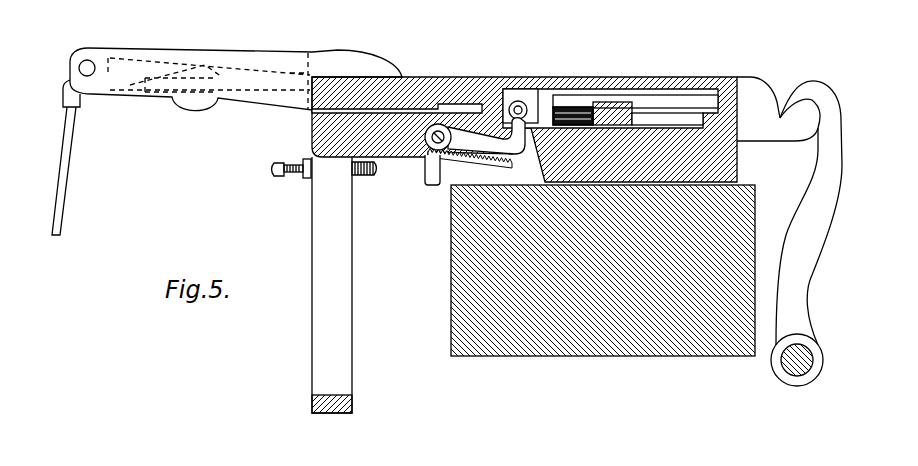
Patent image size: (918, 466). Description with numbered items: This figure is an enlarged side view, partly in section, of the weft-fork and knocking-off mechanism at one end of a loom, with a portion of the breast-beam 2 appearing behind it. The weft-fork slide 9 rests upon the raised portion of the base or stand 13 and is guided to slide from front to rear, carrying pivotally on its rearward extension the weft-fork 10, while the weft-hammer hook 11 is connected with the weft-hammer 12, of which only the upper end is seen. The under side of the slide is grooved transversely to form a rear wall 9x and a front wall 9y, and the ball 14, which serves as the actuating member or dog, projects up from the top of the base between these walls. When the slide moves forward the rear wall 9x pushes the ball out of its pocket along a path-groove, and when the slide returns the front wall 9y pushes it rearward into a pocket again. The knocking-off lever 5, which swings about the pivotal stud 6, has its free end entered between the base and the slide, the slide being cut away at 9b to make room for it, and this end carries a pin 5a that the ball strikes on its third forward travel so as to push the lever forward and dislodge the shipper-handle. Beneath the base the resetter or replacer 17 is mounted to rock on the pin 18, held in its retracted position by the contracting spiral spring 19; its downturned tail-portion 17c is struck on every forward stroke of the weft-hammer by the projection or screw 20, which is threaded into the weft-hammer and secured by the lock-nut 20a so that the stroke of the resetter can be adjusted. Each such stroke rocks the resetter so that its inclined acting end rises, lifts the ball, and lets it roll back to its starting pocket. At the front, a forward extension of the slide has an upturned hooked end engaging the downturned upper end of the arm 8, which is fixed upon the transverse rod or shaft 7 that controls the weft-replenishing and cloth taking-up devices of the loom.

The breast-beam 2 is at (460, 273).
The knocking-off lever 5 is at (613, 106).
The pin or projection 5a is at (577, 112).
The pivotal stud 6 is at (693, 120).
The rod or shaft 7 is at (790, 370).
The arm 8 is at (802, 211).
The weft-fork slide 9 is at (660, 77).
The cut-away portion of weft-fork slide 9b is at (680, 100).
The rear transverse wall 9x is at (518, 100).
The front transverse wall 9y is at (533, 91).
The weft-fork 10 is at (72, 149).
The weft-hammer hook 11 is at (248, 76).
The weft-hammer 12 is at (318, 226).
The base or stand 13 is at (738, 179).
The ball 14 is at (517, 100).
The resetter or replacer 17 is at (490, 153).
The tail-portion 17c is at (430, 176).
The pin 18 is at (418, 160).
The contracting spiral spring 19 is at (452, 172).
The projection or screw 20 is at (365, 177).
The lock-nut 20a is at (305, 179).